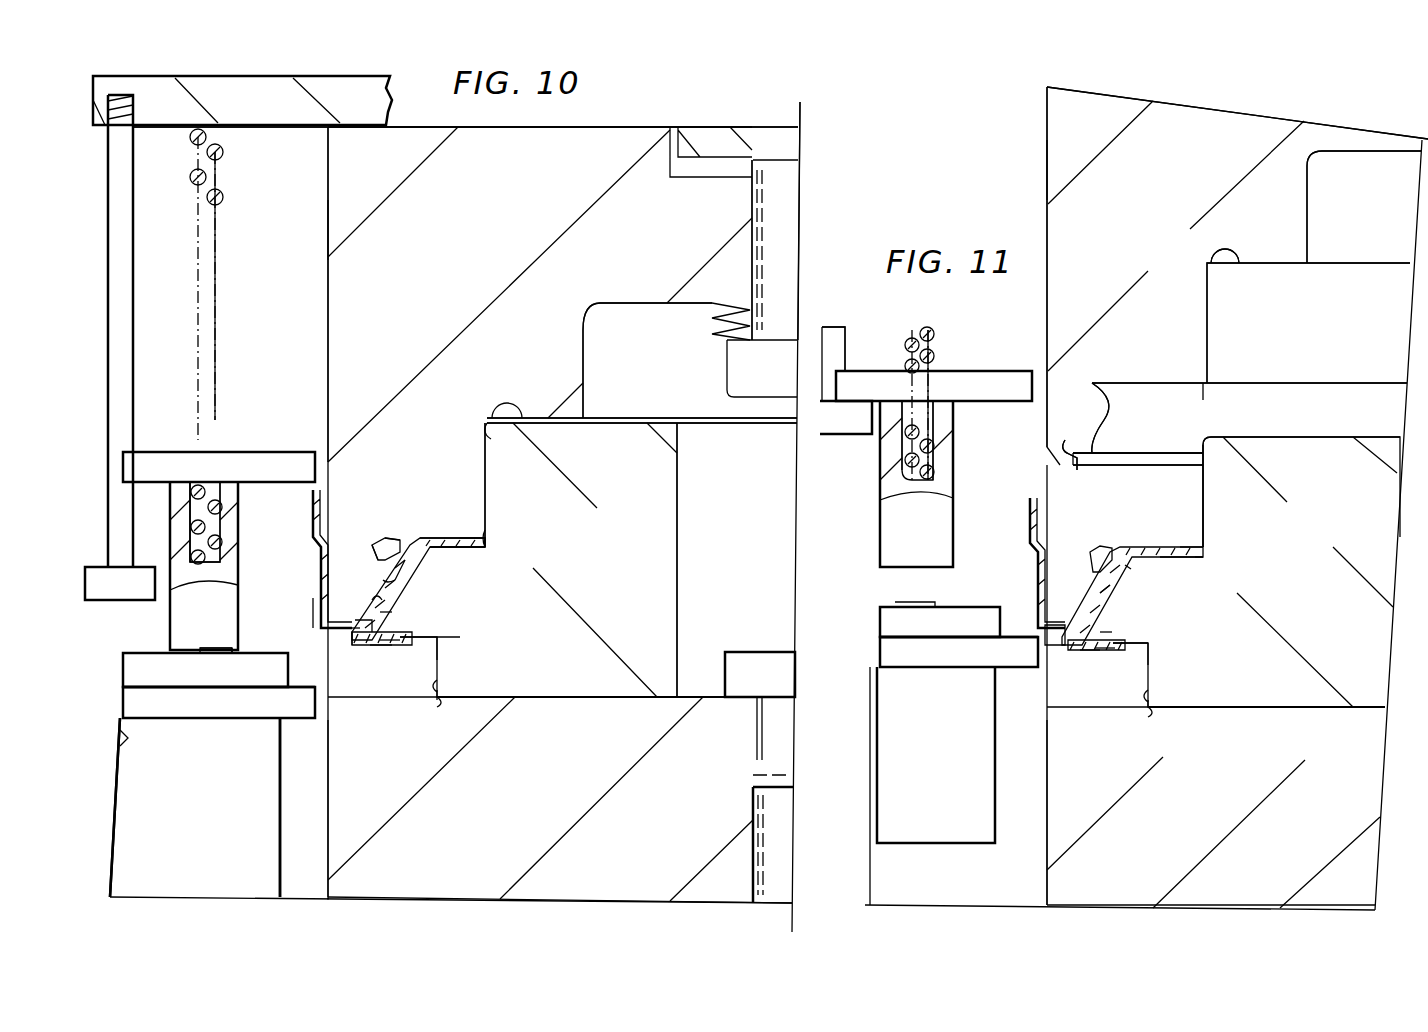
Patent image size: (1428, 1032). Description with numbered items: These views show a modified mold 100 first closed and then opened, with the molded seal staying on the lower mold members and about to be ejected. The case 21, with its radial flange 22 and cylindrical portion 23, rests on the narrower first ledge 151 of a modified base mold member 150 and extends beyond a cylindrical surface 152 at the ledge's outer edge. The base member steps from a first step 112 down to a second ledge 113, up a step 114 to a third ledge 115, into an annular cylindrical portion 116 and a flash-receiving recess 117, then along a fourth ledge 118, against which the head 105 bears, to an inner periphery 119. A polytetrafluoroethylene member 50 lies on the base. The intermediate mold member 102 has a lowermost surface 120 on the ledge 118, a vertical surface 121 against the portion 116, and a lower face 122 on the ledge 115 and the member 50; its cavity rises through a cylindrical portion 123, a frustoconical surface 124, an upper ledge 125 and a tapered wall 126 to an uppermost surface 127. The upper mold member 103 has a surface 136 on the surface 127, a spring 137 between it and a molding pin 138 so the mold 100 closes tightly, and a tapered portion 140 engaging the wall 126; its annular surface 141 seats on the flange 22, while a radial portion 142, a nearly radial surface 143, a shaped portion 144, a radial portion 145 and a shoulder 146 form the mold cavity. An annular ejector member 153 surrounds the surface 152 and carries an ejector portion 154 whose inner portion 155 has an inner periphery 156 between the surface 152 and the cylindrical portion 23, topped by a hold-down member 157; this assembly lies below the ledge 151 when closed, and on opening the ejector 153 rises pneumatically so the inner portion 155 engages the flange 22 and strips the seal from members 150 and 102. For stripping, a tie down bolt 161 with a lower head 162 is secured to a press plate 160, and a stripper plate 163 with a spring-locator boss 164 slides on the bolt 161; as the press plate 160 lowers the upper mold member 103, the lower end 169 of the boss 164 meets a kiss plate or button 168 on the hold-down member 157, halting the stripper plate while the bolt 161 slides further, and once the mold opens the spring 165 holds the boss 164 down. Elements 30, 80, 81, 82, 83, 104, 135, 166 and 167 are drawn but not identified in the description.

In FIG. 10, the case 21 is at (312, 528).
In FIG. 11, the case 21 is at (1024, 526).
In FIG. 10, the radial flange 22 is at (326, 615).
In FIG. 11, the radial flange 22 is at (1066, 630).
In FIG. 10, the cylindrical portion 23 is at (318, 560).
In FIG. 11, the cylindrical portion 23 is at (1028, 562).
In FIG. 10, the gasket lip 30 is at (382, 536).
In FIG. 11, the gasket lip 30 is at (1094, 550).
In FIG. 10, the polytetrafluoroethylene member 50 is at (383, 670).
In FIG. 11, the polytetrafluoroethylene member 50 is at (1098, 656).
In FIG. 10, the gasket 80 is at (417, 550).
In FIG. 11, the gasket 80 is at (1150, 530).
In FIG. 10, the gasket diagonal leg 81 is at (390, 579).
In FIG. 11, the gasket diagonal leg 81 is at (1114, 574).
In FIG. 10, the gasket horizontal leg 82 is at (465, 537).
In FIG. 11, the gasket horizontal leg 82 is at (1184, 540).
In FIG. 11, the gasket end 83 is at (1202, 552).
In FIG. 10, the mold 100 is at (322, 222).
In FIG. 11, the mold 100 is at (1026, 156).
In FIG. 10, the intermediate mold member 102 is at (650, 532).
In FIG. 11, the intermediate mold member 102 is at (1330, 535).
In FIG. 10, the upper mold member 103 is at (574, 195).
In FIG. 11, the upper mold member 103 is at (1208, 197).
In FIG. 10, the lower stop 104 is at (753, 770).
In FIG. 10, the head 105 is at (762, 648).
In FIG. 10, the first step 112 is at (291, 654).
In FIG. 11, the first step 112 is at (1044, 638).
In FIG. 10, the second ledge 113 is at (378, 648).
In FIG. 11, the second ledge 113 is at (1083, 650).
In FIG. 10, the upwardly directed step 114 is at (385, 640).
In FIG. 11, the upwardly directed step 114 is at (1104, 648).
In FIG. 10, the third ledge 115 is at (420, 637).
In FIG. 11, the third ledge 115 is at (1144, 638).
In FIG. 10, the annular cylindrical portion 116 is at (436, 701).
In FIG. 11, the annular cylindrical portion 116 is at (1146, 696).
In FIG. 10, the flash-receiving recess 117 is at (440, 700).
In FIG. 11, the flash-receiving recess 117 is at (1154, 710).
In FIG. 10, the fourth ledge 118 is at (525, 692).
In FIG. 11, the fourth ledge 118 is at (1296, 704).
In FIG. 10, the inner periphery 119 is at (756, 718).
In FIG. 10, the lowermost surface 120 is at (570, 698).
In FIG. 11, the lowermost surface 120 is at (1284, 712).
In FIG. 10, the vertical surface 121 is at (440, 687).
In FIG. 11, the vertical surface 121 is at (1156, 681).
In FIG. 10, the lower face 122 is at (437, 640).
In FIG. 11, the lower face 122 is at (1152, 642).
In FIG. 10, the cylindrical vertical portion 123 is at (393, 613).
In FIG. 11, the cylindrical vertical portion 123 is at (1108, 625).
In FIG. 10, the frustoconical surface 124 is at (382, 578).
In FIG. 11, the frustoconical surface 124 is at (1128, 566).
In FIG. 10, the upper ledge 125 is at (476, 556).
In FIG. 11, the upper ledge 125 is at (1190, 558).
In FIG. 10, the tapered mold wall 126 is at (484, 535).
In FIG. 11, the tapered mold wall 126 is at (1206, 506).
In FIG. 10, the uppermost surface 127 is at (640, 425).
In FIG. 11, the uppermost surface 127 is at (1262, 420).
In FIG. 10, the ceiling 135 is at (630, 126).
In FIG. 10, the surface 136 is at (612, 418).
In FIG. 11, the surface 136 is at (1260, 264).
In FIG. 10, the spring 137 is at (724, 302).
In FIG. 10, the molding pin 138 is at (798, 200).
In FIG. 10, the tapered portion 140 is at (491, 408).
In FIG. 11, the tapered portion 140 is at (1210, 264).
In FIG. 10, the annular surface 141 is at (314, 596).
In FIG. 11, the annular surface 141 is at (1064, 460).
In FIG. 10, the radially extending portion 142 is at (484, 534).
In FIG. 11, the radially extending portion 142 is at (1182, 380).
In FIG. 10, the surface 143 is at (392, 537).
In FIG. 11, the surface 143 is at (1096, 376).
In FIG. 10, the shaped mold portion 144 is at (384, 546).
In FIG. 11, the shaped mold portion 144 is at (1106, 406).
In FIG. 10, the radial portion 145 is at (374, 609).
In FIG. 11, the radial portion 145 is at (1100, 438).
In FIG. 10, the shoulder 146 is at (350, 636).
In FIG. 11, the shoulder 146 is at (1081, 468).
In FIG. 10, the base mold member 150 is at (568, 792).
In FIG. 11, the base mold member 150 is at (1213, 797).
In FIG. 10, the first ledge 151 is at (338, 632).
In FIG. 11, the first ledge 151 is at (1030, 624).
In FIG. 10, the cylindrical surface 152 is at (322, 802).
In FIG. 11, the cylindrical surface 152 is at (1040, 750).
In FIG. 10, the annular ejector member 153 is at (229, 812).
In FIG. 11, the annular ejector member 153 is at (964, 757).
In FIG. 10, the ejector portion 154 is at (202, 710).
In FIG. 11, the ejector portion 154 is at (934, 666).
In FIG. 10, the inner portion 155 is at (288, 714).
In FIG. 11, the inner portion 155 is at (1004, 666).
In FIG. 10, the inner periphery 156 is at (324, 726).
In FIG. 11, the inner periphery 156 is at (1022, 670).
In FIG. 10, the hold-down member 157 is at (234, 676).
In FIG. 11, the hold-down member 157 is at (990, 631).
In FIG. 10, the press plate 160 is at (244, 78).
In FIG. 10, the tie down bolt 161 is at (140, 290).
In FIG. 11, the tie down bolt 161 is at (830, 324).
In FIG. 10, the lower head 162 is at (130, 580).
In FIG. 11, the lower head 162 is at (866, 436).
In FIG. 10, the stripper plate 163 is at (138, 458).
In FIG. 11, the stripper plate 163 is at (853, 370).
In FIG. 10, the spring-locator boss 164 is at (212, 492).
In FIG. 11, the spring-locator boss 164 is at (940, 455).
In FIG. 10, the spring 165 is at (218, 304).
In FIG. 11, the spring 165 is at (928, 322).
In FIG. 10, the hanger block 166 is at (226, 580).
In FIG. 11, the hanger block 166 is at (936, 476).
In FIG. 10, the guide 167 is at (216, 496).
In FIG. 11, the guide 167 is at (938, 406).
In FIG. 10, the kiss plate 168 is at (198, 652).
In FIG. 11, the kiss plate 168 is at (892, 600).
In FIG. 10, the lower end 169 is at (234, 644).
In FIG. 11, the lower end 169 is at (884, 582).